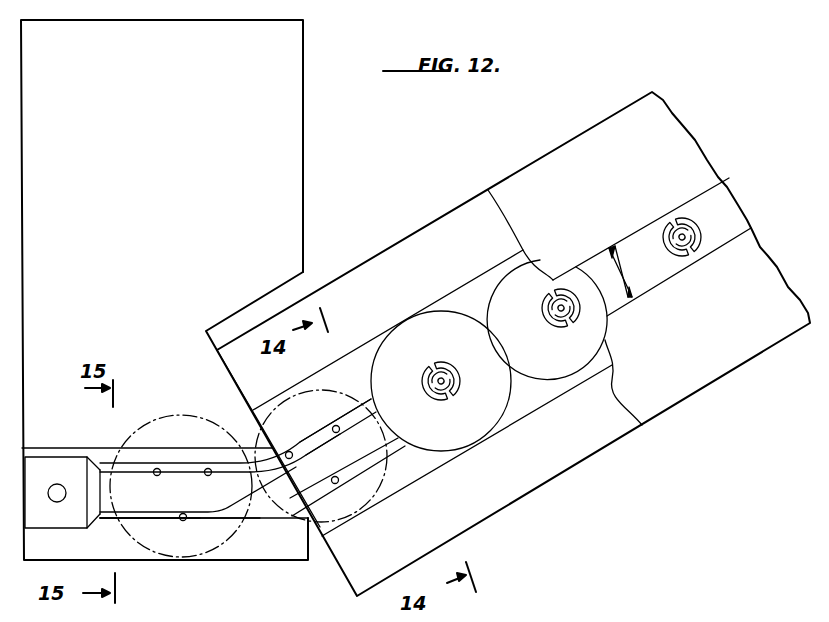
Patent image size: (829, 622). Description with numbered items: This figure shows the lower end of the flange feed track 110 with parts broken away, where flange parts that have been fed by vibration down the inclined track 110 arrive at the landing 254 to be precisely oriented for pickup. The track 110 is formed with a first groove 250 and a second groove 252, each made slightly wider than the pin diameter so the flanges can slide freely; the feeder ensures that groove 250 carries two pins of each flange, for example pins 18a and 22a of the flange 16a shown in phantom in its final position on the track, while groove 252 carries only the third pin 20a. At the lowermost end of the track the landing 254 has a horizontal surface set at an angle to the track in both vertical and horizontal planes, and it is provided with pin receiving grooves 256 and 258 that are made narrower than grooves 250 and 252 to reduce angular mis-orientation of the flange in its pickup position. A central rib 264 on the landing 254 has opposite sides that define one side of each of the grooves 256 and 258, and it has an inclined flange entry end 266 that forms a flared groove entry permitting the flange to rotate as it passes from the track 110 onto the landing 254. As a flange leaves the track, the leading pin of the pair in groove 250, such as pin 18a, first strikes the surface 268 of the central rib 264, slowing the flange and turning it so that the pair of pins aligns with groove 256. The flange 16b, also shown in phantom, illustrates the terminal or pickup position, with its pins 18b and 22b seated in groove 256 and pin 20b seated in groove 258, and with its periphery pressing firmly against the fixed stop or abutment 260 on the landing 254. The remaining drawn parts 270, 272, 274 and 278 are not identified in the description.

The flange feed track 110 is at (575, 483).
The cover plate 272 is at (708, 178).
The lower plate 274 is at (757, 258).
The rotary disc 270 is at (465, 298).
The landing 254 is at (240, 552).
The inclined flange entry end 266 is at (255, 513).
The fixed stop or abutment 260 is at (108, 462).
The chamfered shoulder 278 is at (108, 465).
The central rib 264 is at (190, 507).
The pin receiving groove 256 is at (183, 466).
The first groove 250 is at (358, 418).
The pin receiving groove 258 is at (135, 519).
The second groove 252 is at (361, 477).
The surface of central rib 268 is at (273, 469).
The pin 18b is at (156, 476).
The pin 22b is at (209, 476).
The pin 20b is at (184, 521).
The pin 18a is at (289, 450).
The pin 22a is at (338, 432).
The pin 20a is at (337, 483).
The flange 16b is at (168, 406).
The flange 16a is at (384, 505).